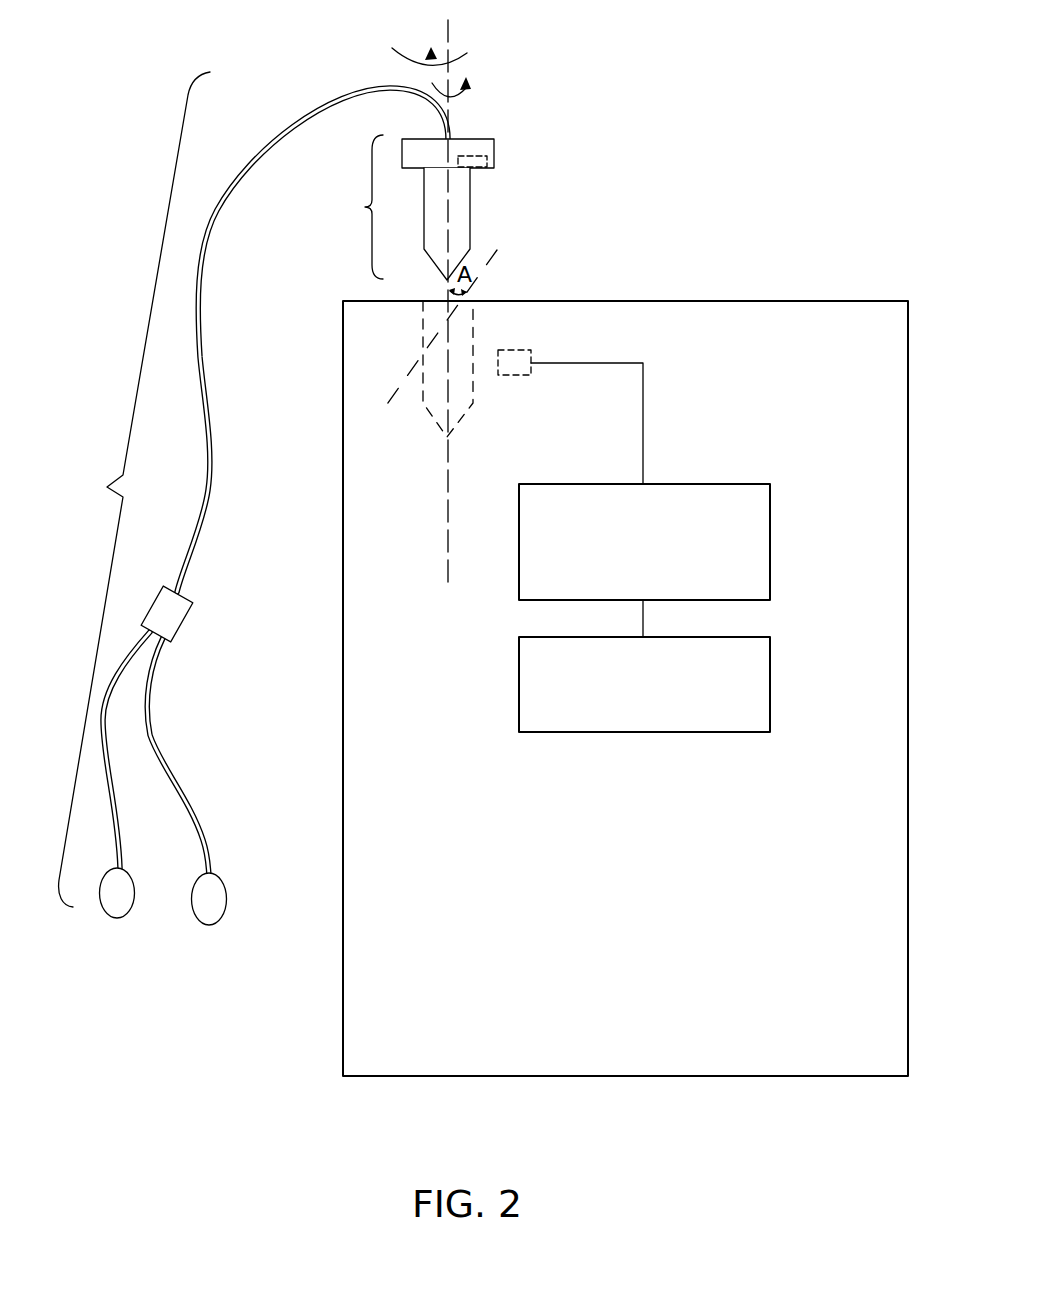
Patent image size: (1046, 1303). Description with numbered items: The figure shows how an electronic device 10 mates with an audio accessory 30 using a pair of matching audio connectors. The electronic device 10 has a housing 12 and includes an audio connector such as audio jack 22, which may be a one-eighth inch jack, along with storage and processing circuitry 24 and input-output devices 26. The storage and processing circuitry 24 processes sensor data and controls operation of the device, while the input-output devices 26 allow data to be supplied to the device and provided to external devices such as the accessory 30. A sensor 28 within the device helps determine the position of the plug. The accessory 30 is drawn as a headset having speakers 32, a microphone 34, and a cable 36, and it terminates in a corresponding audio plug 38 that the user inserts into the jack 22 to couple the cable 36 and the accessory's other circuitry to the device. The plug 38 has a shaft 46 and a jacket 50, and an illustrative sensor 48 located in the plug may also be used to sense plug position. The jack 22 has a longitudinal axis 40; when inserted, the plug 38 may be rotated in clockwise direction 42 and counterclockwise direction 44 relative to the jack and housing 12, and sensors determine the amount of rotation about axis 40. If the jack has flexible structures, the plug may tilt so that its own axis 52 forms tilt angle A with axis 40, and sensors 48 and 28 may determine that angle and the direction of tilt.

The electronic device 10 is at (783, 250).
The housing 12 is at (437, 1077).
The audio jack 22 is at (473, 333).
The storage and processing circuitry 24 is at (704, 484).
The input-output devices 26 is at (770, 684).
The sensor 28 is at (513, 386).
The accessory 30 is at (134, 489).
The speakers 32 is at (205, 921).
The microphone 34 is at (177, 618).
The cable 36 is at (223, 206).
The audio plug 38 is at (359, 207).
The longitudinal axis 40 is at (450, 32).
The clockwise direction 42 is at (422, 45).
The counterclockwise direction 44 is at (462, 95).
The shaft 46 is at (463, 214).
The sensor 48 is at (477, 170).
The jacket 50 is at (409, 157).
The axis 52 is at (412, 368).